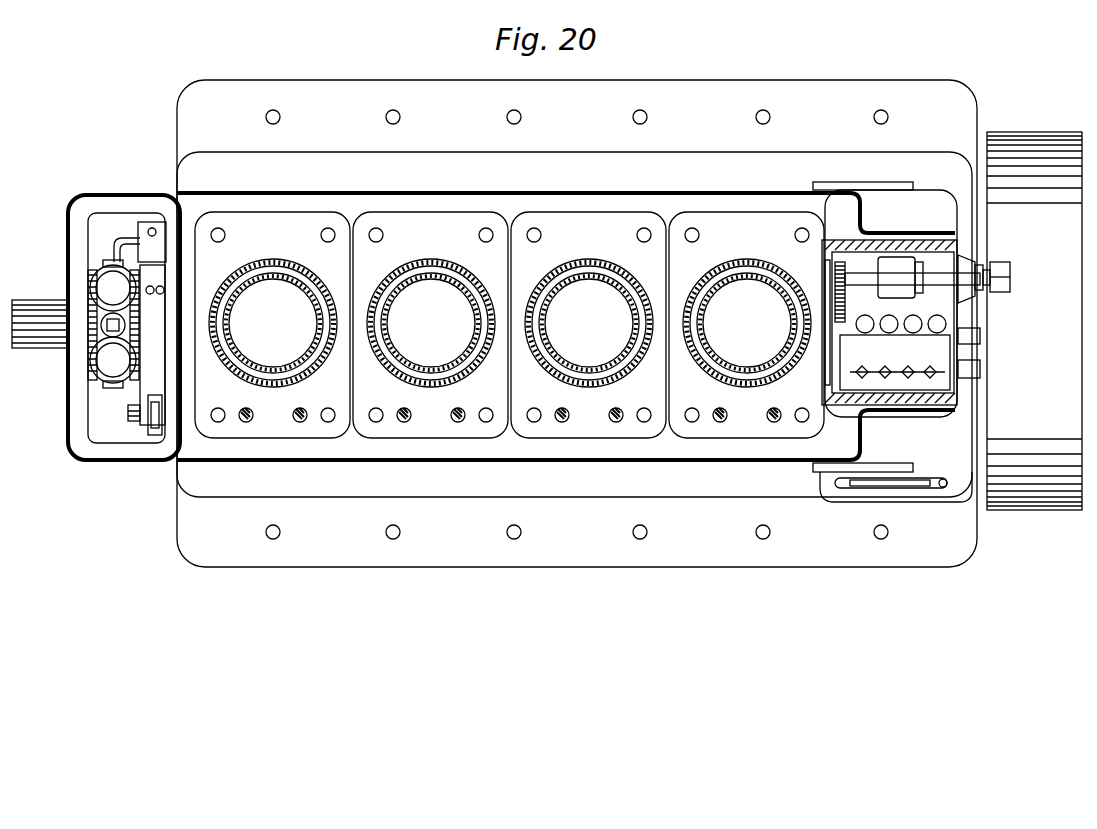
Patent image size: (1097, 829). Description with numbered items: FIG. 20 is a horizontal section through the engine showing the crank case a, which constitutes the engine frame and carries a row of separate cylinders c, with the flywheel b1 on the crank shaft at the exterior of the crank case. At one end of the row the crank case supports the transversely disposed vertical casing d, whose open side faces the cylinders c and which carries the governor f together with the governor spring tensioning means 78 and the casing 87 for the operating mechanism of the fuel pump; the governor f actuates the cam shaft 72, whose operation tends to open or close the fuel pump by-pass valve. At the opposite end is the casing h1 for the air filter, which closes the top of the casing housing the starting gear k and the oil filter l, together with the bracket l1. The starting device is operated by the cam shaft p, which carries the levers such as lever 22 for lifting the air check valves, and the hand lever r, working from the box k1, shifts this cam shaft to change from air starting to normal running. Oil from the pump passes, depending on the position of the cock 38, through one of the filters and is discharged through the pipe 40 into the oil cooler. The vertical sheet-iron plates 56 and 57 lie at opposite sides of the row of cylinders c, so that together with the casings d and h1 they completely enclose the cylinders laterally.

The crank case a is at (697, 553).
The cylinders c is at (315, 297).
The casing d is at (913, 236).
The governor f is at (917, 279).
The casing h1 is at (68, 212).
The oil filter l is at (97, 286).
The pump bracket l1 is at (153, 232).
The starting gear k is at (133, 345).
The box k1 is at (857, 489).
The cam shaft p is at (131, 421).
The hand lever r is at (915, 488).
The flywheel b1 is at (1034, 321).
The lever 22 is at (160, 438).
The cock 38 is at (103, 338).
The pipe 40 is at (116, 236).
The vertical plate 56 is at (723, 461).
The vertical plate 57 is at (693, 193).
The cam shaft 72 is at (897, 381).
The governor spring tensioning means 78 is at (995, 271).
The casing 87 is at (832, 405).